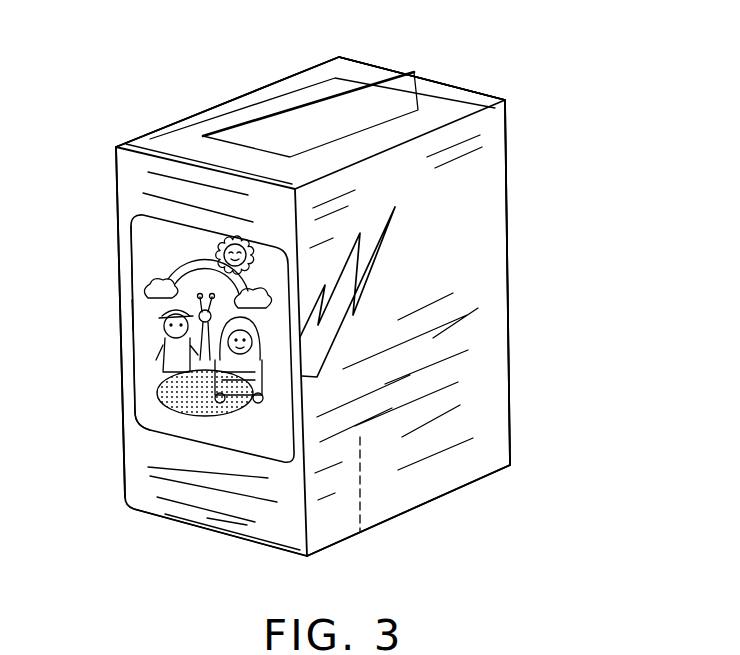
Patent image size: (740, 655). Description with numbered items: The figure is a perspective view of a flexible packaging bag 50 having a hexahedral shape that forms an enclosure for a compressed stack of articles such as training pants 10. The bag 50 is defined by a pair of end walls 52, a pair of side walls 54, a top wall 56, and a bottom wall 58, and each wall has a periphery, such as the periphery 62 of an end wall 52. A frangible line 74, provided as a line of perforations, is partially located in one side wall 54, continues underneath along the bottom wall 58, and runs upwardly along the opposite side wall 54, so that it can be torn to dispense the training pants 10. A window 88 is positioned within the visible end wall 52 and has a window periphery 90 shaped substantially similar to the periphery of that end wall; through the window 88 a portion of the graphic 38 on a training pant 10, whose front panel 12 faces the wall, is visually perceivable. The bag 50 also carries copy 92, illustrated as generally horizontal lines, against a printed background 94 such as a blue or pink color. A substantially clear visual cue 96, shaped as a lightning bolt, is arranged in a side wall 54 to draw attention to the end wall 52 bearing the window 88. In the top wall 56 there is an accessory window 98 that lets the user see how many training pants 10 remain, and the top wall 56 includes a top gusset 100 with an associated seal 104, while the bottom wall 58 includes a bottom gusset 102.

The training pants 10 is at (149, 415).
The front panel 12 is at (140, 368).
The graphic 38 is at (128, 315).
The flexible packaging bag 50 is at (590, 68).
The end walls 52 is at (453, 82).
The side walls 54 is at (210, 104).
The top wall 56 is at (473, 96).
The bottom wall 58 is at (450, 494).
The periphery 62 is at (114, 217).
The frangible line 74 is at (361, 502).
The window 88 is at (135, 278).
The window periphery 90 is at (136, 344).
The copy 92 is at (263, 90).
The background 94 is at (422, 85).
The visual cue 96 is at (362, 277).
The accessory window 98 is at (241, 121).
The top gusset 100 is at (168, 153).
The bottom gusset 102 is at (191, 529).
The seal 104 is at (357, 96).